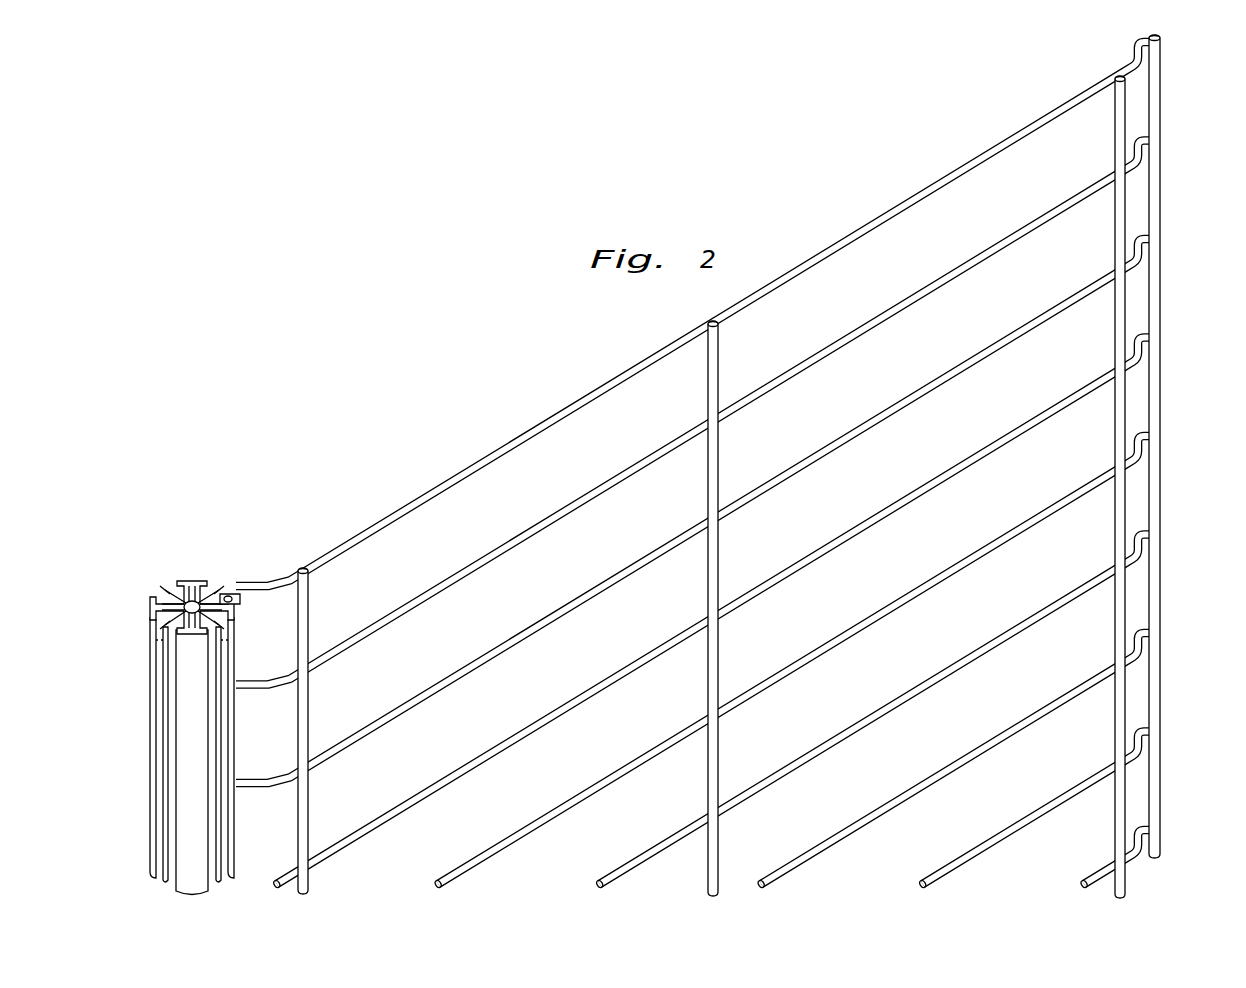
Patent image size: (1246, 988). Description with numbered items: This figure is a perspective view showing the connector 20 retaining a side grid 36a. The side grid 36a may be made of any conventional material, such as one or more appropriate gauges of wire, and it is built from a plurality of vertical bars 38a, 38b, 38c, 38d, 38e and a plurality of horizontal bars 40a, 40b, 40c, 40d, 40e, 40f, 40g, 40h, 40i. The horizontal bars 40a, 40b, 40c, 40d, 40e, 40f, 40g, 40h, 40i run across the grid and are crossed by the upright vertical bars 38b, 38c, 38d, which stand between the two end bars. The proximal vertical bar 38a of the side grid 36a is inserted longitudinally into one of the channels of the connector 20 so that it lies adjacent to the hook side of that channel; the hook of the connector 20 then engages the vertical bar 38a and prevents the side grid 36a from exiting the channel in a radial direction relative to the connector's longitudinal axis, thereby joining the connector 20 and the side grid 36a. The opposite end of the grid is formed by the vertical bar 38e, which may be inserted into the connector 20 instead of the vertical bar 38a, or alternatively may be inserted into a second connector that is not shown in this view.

The connector 20 is at (138, 678).
The side grid 36a is at (940, 165).
The vertical bar 38a is at (218, 598).
The vertical bar 38b is at (310, 601).
The vertical bar 38c is at (720, 357).
The vertical bar 38d is at (1113, 146).
The vertical bar 38e is at (1162, 87).
The horizontal bar 40a is at (512, 441).
The horizontal bar 40b is at (512, 539).
The horizontal bar 40c is at (512, 638).
The horizontal bar 40d is at (512, 736).
The horizontal bar 40e is at (575, 796).
The horizontal bar 40f is at (650, 847).
The horizontal bar 40g is at (945, 768).
The horizontal bar 40h is at (1012, 825).
The horizontal bar 40i is at (1098, 871).